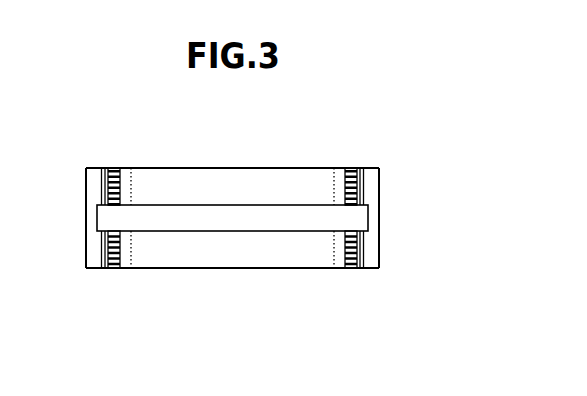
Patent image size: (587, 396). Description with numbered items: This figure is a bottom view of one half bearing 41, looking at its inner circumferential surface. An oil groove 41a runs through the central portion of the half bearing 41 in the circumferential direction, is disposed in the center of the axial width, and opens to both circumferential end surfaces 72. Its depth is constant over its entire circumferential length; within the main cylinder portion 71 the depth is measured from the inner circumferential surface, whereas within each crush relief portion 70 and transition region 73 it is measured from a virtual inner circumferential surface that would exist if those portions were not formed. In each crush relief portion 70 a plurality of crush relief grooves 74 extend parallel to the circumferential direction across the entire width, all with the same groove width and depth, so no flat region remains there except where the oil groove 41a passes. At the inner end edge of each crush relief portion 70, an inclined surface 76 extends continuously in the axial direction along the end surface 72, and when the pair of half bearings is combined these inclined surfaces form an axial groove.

The half bearing 41 is at (352, 134).
The oil groove 41a is at (211, 215).
The crush relief portion 70 is at (114, 278).
The main cylinder portion 71 is at (224, 278).
The end surface in the circumferential direction 72 is at (92, 268).
The transition region 73 is at (128, 160).
The crush relief groove 74 is at (98, 192).
The inclined surface 76 is at (101, 278).